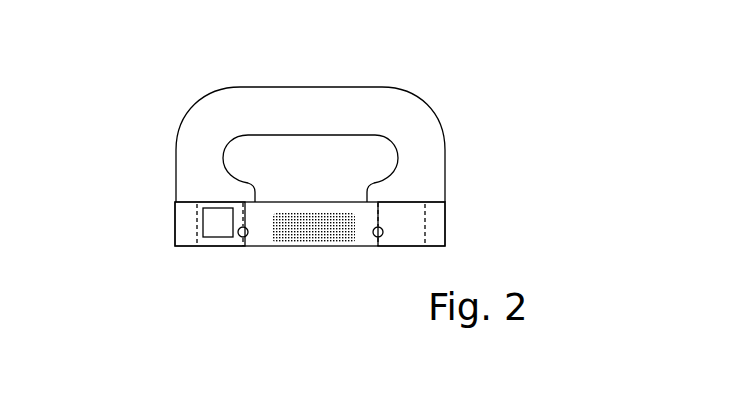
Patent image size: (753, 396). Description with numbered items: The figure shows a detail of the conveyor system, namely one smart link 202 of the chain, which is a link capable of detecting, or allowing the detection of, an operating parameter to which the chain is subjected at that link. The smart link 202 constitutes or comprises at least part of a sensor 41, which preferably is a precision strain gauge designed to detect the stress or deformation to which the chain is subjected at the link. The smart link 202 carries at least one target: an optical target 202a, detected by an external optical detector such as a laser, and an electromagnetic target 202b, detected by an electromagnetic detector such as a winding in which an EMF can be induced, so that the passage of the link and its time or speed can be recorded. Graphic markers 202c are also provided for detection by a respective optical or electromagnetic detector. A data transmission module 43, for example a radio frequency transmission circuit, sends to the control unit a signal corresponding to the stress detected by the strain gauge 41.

The smart link 202 is at (382, 162).
The sensor 41 is at (310, 166).
The optical target 202a is at (454, 212).
The electromagnetic target 202b is at (168, 221).
The graphic markers 202c is at (306, 253).
The data transmission module 43 is at (207, 250).